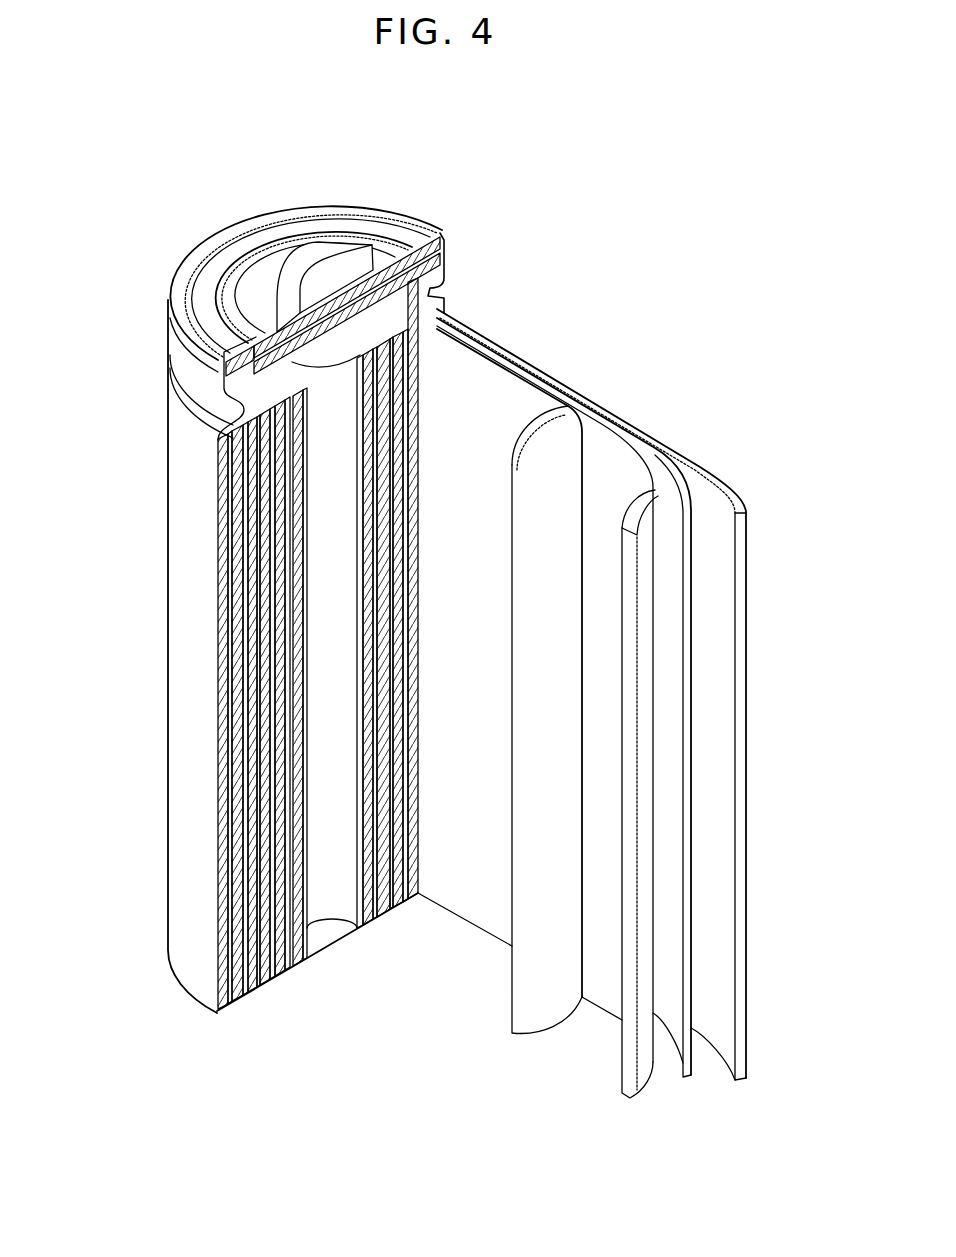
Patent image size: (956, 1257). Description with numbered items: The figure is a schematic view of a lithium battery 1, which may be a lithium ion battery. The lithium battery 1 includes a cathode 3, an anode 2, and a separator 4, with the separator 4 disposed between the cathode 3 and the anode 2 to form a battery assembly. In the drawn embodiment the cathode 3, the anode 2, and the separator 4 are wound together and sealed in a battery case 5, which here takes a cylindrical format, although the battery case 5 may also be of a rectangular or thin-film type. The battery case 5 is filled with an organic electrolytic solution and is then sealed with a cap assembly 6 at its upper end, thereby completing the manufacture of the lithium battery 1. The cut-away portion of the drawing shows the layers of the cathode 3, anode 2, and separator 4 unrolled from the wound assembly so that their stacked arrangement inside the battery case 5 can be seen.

The lithium battery 1 is at (553, 245).
The anode 2 is at (735, 497).
The cathode 3 is at (612, 442).
The separator 4 is at (520, 387).
The battery case 5 is at (178, 597).
The cap assembly 6 is at (308, 252).